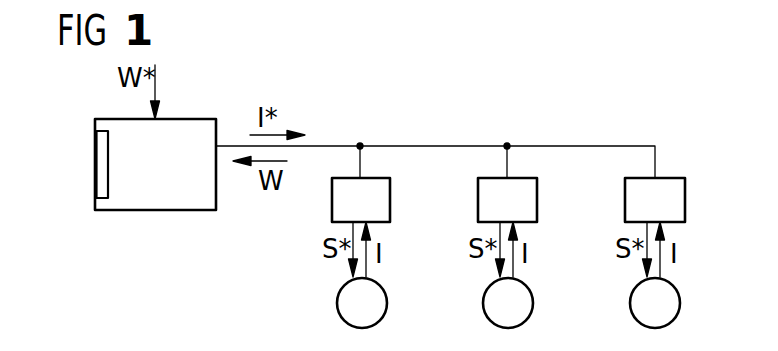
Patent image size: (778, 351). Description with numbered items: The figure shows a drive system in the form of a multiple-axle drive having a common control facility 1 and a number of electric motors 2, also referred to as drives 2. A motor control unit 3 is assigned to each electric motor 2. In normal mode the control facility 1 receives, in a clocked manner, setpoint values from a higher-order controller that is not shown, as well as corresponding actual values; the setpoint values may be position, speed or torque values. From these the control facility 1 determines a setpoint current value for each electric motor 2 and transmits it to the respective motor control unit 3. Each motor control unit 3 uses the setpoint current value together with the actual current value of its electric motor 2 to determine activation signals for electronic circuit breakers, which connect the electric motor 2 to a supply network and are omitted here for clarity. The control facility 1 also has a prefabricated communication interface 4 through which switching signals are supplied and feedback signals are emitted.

The control facility 1 is at (190, 119).
The electric motor 2 is at (338, 305).
The motor control unit 3 is at (332, 199).
The communication interface 4 is at (96, 166).